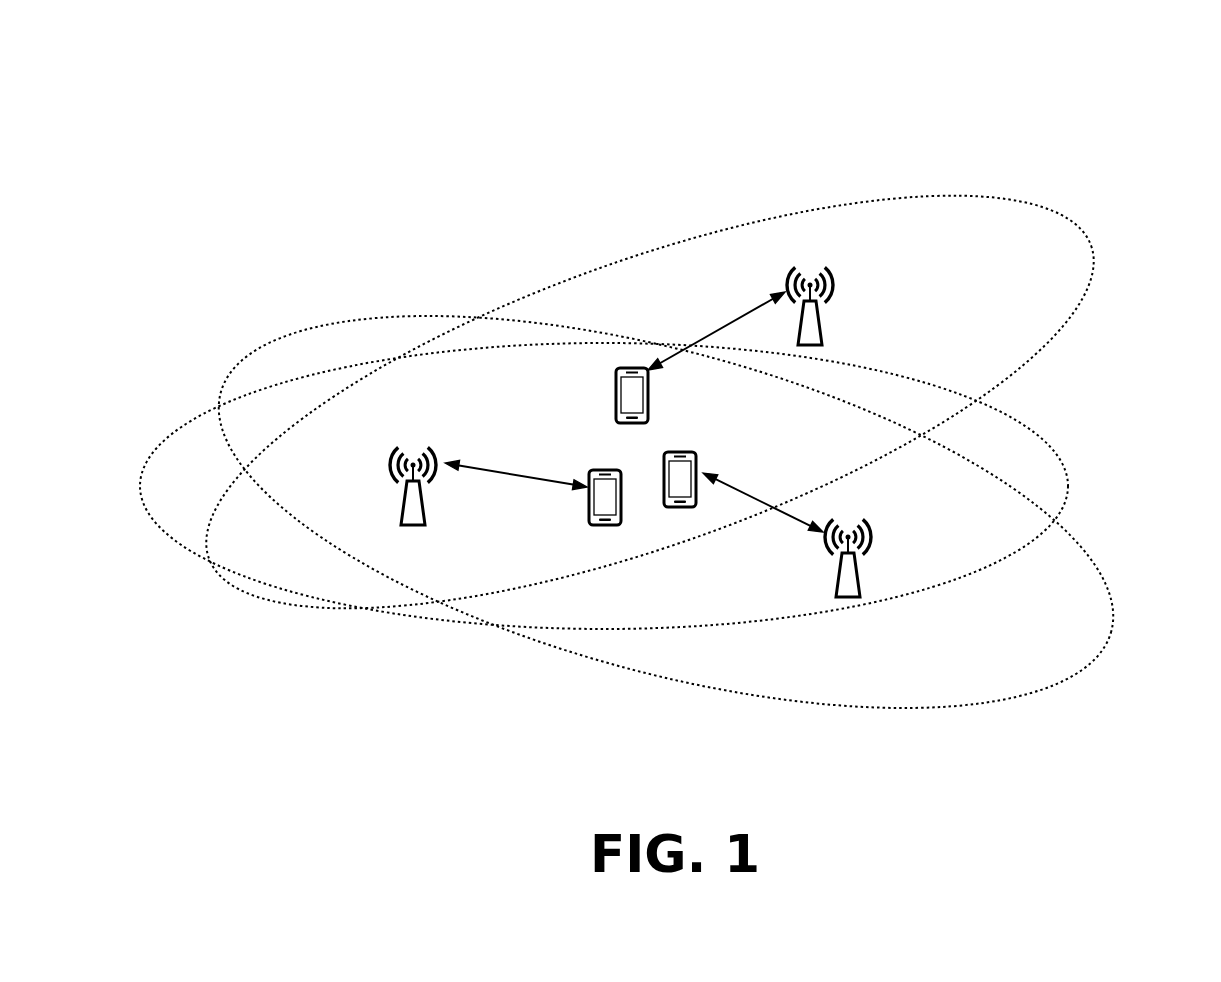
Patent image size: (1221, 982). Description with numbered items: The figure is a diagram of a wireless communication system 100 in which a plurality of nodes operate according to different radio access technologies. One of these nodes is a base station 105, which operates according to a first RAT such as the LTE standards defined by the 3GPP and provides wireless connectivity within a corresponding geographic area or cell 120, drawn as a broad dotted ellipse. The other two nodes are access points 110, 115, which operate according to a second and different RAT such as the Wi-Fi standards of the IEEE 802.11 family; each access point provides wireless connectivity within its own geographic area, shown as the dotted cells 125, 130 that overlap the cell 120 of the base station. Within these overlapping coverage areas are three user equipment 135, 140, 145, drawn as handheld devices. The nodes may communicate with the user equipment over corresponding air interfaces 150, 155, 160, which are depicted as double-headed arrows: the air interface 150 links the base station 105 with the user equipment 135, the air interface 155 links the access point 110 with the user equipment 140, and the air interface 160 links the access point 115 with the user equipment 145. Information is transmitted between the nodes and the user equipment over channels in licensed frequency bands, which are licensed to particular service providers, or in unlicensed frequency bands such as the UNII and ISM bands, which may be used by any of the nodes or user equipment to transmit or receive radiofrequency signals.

The wireless communication system 100 is at (1114, 90).
The base station 105 is at (400, 518).
The access point 110 is at (826, 338).
The access point 115 is at (847, 600).
The cell 120 is at (172, 433).
The cell 125 is at (763, 213).
The cell 130 is at (845, 705).
The user equipment 135 is at (596, 525).
The user equipment 140 is at (616, 394).
The user equipment 145 is at (662, 490).
The air interface 150 is at (531, 478).
The air interface 155 is at (705, 333).
The air interface 160 is at (743, 492).